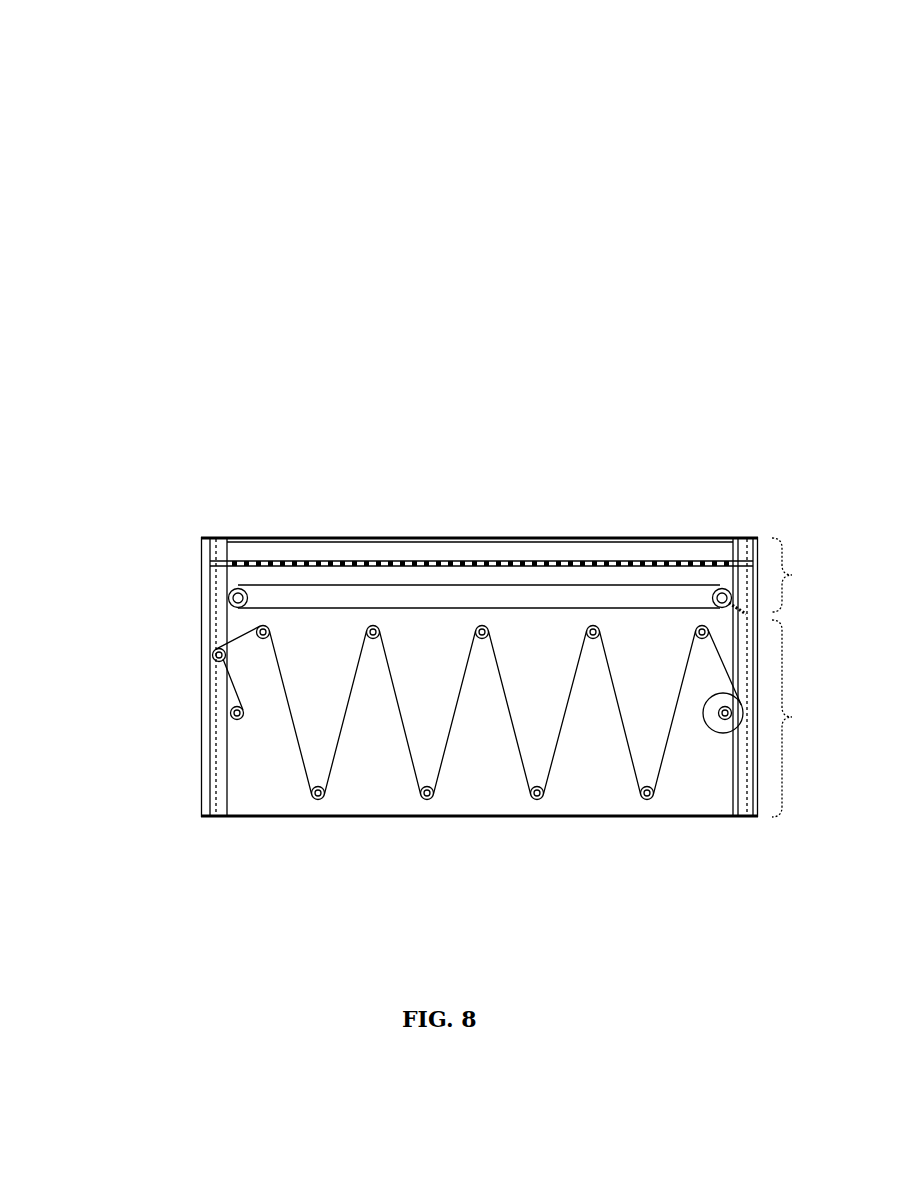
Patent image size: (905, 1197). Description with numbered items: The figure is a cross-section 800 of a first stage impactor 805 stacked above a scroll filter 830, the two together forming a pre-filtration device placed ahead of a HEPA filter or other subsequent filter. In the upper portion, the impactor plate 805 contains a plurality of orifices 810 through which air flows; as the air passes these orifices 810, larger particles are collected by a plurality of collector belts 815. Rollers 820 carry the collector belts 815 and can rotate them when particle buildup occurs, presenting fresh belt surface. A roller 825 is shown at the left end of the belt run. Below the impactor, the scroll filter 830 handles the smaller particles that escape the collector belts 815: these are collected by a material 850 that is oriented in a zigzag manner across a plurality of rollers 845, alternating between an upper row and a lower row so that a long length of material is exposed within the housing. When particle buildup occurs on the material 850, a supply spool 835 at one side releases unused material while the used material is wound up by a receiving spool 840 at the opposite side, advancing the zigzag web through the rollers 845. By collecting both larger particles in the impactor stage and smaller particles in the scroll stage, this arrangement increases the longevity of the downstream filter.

The cross-section 800 is at (98, 89).
The first stage impactor 805 is at (498, 519).
The orifices 810 is at (530, 551).
The collector belts 815 is at (460, 551).
The rollers 820 is at (634, 579).
The roller 825 is at (226, 578).
The scroll filter 830 is at (514, 770).
The supply spool 835 is at (721, 743).
The receiving spool 840 is at (234, 734).
The rollers 845 is at (427, 815).
The material 850 is at (621, 757).